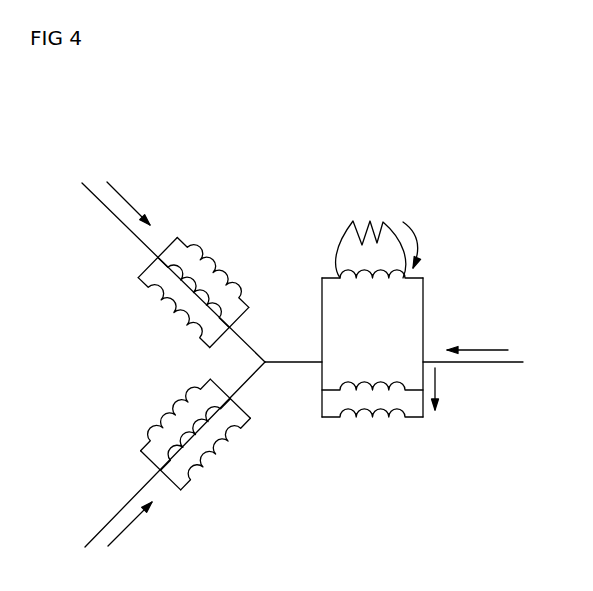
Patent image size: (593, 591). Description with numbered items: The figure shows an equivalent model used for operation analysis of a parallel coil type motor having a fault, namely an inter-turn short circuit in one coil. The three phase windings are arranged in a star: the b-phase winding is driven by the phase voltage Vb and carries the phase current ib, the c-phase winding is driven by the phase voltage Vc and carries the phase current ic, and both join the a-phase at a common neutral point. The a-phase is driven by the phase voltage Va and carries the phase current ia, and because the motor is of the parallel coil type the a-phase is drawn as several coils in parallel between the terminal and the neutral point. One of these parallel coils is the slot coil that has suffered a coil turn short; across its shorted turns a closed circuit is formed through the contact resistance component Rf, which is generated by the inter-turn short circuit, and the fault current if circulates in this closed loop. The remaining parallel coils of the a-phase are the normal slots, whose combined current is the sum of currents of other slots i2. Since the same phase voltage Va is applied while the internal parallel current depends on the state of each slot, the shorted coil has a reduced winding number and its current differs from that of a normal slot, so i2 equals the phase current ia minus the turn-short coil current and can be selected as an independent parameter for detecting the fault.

The phase voltage Vb is at (159, 262).
The phase current ib is at (128, 197).
The phase voltage Vc is at (162, 464).
The phase current ic is at (132, 534).
The contact resistance component Rf is at (372, 230).
The fault current if is at (422, 245).
The sum of currents of other slots i2 is at (393, 392).
The phase voltage Va is at (490, 361).
The phase current ia is at (477, 337).